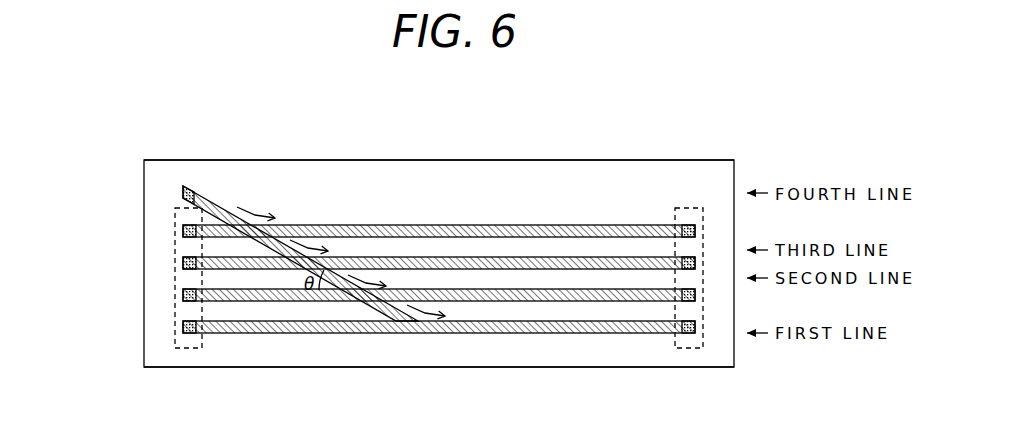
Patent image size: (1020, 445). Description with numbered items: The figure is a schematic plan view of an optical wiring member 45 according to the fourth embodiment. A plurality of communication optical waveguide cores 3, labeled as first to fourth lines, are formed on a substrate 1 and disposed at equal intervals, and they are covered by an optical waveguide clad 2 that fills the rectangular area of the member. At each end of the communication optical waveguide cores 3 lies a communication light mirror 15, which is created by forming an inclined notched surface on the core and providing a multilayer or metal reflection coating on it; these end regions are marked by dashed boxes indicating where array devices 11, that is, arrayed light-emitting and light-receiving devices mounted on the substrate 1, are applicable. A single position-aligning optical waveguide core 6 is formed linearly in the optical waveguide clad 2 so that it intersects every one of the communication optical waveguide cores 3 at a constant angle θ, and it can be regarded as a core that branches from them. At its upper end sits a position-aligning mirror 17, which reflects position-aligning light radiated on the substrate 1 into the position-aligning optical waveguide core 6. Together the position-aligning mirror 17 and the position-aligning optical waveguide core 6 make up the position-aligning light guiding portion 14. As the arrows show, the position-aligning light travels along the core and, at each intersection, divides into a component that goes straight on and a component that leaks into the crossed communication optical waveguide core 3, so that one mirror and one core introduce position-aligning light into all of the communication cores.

The optical wiring member 45 is at (135, 142).
The substrate 1 is at (517, 352).
The optical waveguide clad 2 is at (463, 160).
The communication optical waveguide core 3 is at (545, 225).
The position-aligning optical waveguide core 6 is at (206, 197).
The array device 11 is at (188, 350).
The position-aligning light guiding portion 14 is at (234, 186).
The communication light mirror 15 is at (183, 230).
The position-aligning mirror 17 is at (186, 187).